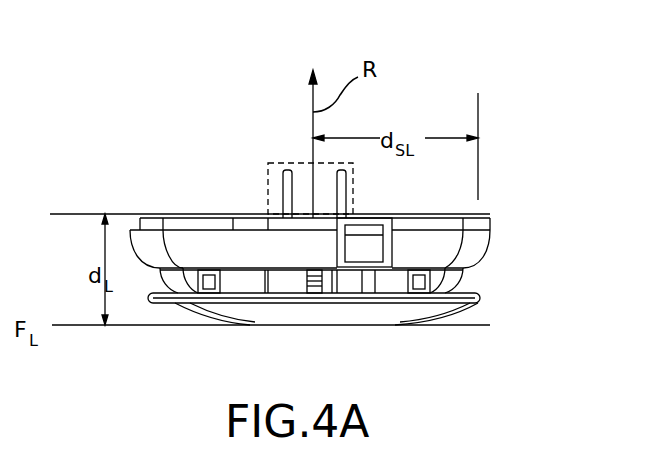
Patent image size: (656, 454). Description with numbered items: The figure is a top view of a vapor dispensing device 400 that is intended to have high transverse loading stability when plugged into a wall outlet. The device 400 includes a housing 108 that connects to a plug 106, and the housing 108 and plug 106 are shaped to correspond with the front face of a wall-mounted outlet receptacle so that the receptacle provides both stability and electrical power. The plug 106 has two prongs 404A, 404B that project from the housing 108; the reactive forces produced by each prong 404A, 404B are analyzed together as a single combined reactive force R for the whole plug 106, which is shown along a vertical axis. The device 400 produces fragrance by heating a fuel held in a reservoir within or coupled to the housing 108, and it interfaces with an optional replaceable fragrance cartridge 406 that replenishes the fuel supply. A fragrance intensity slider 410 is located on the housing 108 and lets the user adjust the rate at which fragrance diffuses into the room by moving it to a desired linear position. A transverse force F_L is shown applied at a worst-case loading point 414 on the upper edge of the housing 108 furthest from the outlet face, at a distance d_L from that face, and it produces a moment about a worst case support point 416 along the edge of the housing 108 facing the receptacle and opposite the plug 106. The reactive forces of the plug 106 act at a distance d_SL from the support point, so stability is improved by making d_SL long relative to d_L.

The vapor dispensing device 400 is at (129, 138).
The plug 106 is at (270, 164).
The housing 108 is at (480, 240).
The prong 404A is at (283, 182).
The prong 404B is at (346, 180).
The replaceable fragrance cartridge 406 is at (467, 279).
The fragrance intensity slider 410 is at (372, 248).
The worst-case transverse loading point 414 is at (247, 323).
The worst case support point 416 is at (473, 213).